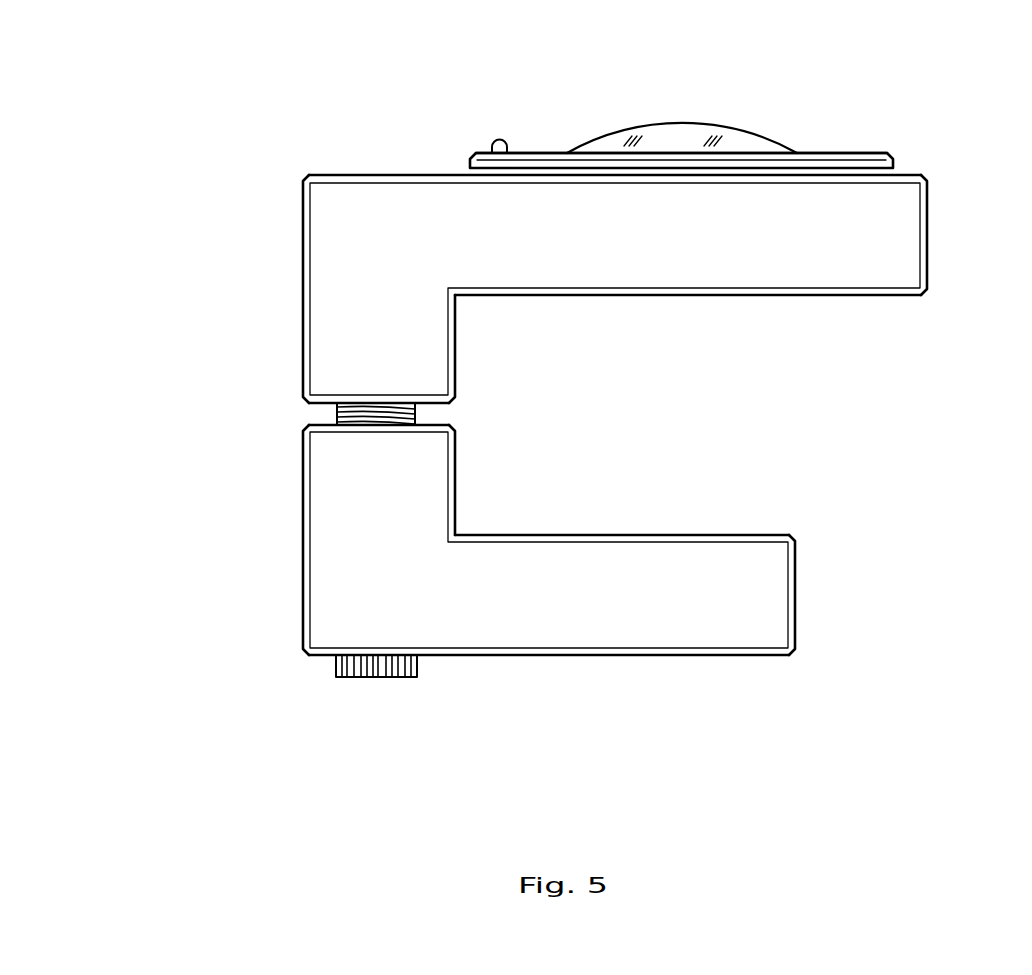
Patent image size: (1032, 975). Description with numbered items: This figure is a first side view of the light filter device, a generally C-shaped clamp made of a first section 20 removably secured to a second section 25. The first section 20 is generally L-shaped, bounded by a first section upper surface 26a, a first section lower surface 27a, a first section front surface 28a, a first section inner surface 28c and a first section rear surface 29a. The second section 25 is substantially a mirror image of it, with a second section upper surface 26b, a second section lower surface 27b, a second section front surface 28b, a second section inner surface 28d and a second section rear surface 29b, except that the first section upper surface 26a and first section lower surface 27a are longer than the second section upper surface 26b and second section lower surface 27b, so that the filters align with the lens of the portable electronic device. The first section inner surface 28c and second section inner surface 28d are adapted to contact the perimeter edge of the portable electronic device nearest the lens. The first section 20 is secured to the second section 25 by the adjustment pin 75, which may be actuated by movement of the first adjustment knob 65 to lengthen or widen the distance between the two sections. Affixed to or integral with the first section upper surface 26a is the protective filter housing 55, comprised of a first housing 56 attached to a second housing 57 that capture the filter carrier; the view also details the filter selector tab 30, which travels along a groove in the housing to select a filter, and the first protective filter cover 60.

The first section 20 is at (343, 167).
The second section 25 is at (296, 624).
The first section upper surface 26a is at (425, 172).
The second section upper surface 26b is at (713, 540).
The first section lower surface 27a is at (822, 298).
The second section lower surface 27b is at (694, 656).
The first section front surface 28a is at (929, 262).
The second section front surface 28b is at (796, 588).
The first section inner surface 28c is at (456, 350).
The second section inner surface 28d is at (456, 480).
The first section rear surface 29a is at (345, 322).
The second section rear surface 29b is at (340, 511).
The filter selector tab 30 is at (498, 141).
The protective filter housing 55 is at (452, 140).
The first housing 56 is at (893, 155).
The second housing 57 is at (895, 173).
The first protective filter cover 60 is at (672, 143).
The first adjustment knob 65 is at (372, 677).
The adjustment pin 75 is at (337, 418).